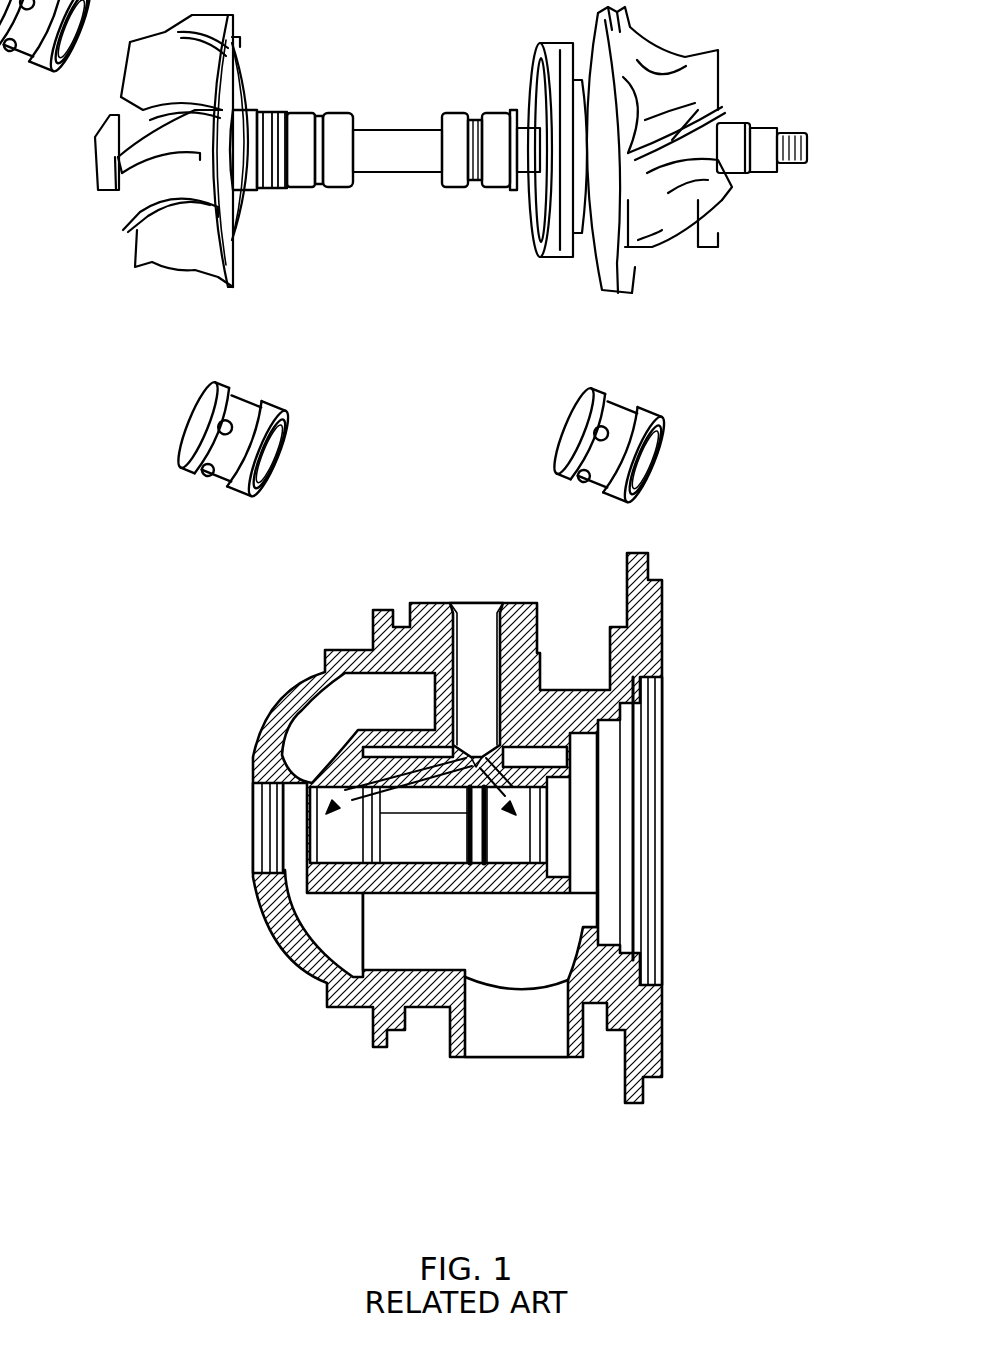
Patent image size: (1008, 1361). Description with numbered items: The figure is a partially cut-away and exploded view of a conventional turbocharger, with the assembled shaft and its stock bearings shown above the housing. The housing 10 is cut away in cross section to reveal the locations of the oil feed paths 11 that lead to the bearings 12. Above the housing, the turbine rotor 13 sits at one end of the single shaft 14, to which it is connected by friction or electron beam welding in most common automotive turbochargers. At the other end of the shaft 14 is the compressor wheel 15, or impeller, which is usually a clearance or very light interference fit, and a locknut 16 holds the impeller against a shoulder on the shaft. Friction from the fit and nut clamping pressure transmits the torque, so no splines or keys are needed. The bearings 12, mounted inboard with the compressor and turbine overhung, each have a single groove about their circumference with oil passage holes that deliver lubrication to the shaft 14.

The housing 10 is at (703, 943).
The oil feed paths 11 is at (342, 753).
The bearings 12 is at (317, 773).
The turbine rotor 13 is at (120, 230).
The shaft 14 is at (397, 128).
The compressor wheel 15 is at (703, 243).
The locknut 16 is at (743, 178).